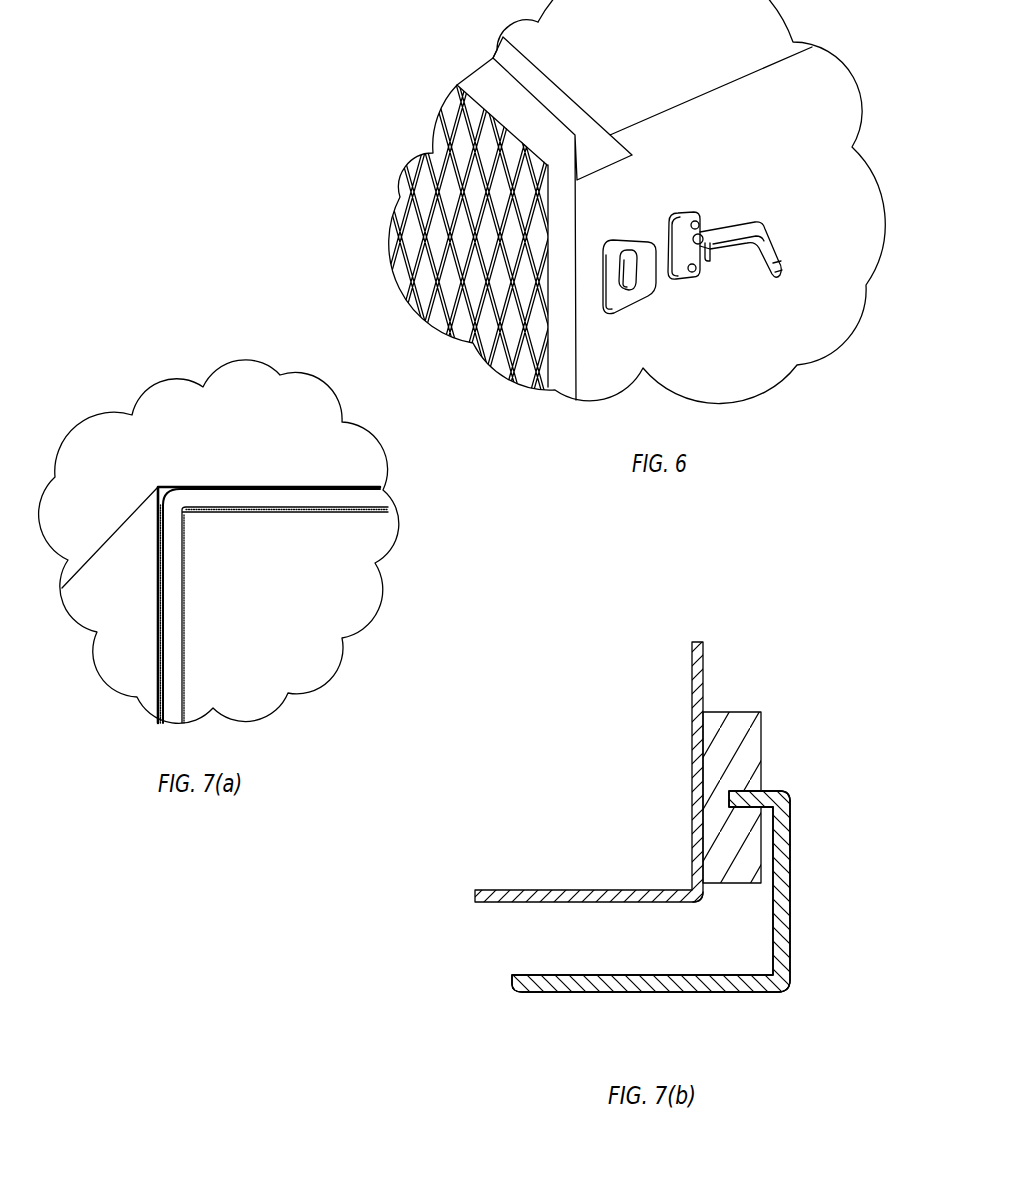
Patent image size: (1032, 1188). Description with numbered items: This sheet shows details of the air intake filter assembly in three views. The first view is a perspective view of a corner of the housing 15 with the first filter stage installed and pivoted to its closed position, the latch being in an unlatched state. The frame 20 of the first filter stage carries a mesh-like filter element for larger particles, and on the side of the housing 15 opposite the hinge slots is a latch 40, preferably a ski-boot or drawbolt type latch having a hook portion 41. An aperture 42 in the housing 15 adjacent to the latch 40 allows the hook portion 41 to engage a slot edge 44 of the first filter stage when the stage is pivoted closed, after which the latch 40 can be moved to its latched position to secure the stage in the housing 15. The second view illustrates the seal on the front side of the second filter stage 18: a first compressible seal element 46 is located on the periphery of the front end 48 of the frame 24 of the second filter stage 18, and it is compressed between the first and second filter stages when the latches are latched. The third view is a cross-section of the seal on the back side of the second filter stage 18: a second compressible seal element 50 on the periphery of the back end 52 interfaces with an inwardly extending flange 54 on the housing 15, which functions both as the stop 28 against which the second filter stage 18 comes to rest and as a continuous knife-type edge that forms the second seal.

In FIG. 6, the frame 20 is at (690, 98).
In FIG. 6, the latch 40 is at (723, 228).
In FIG. 6, the hook portion 41 is at (770, 250).
In FIG. 6, the aperture 42 is at (637, 297).
In FIG. 6, the slot edge 44 is at (643, 248).
In FIG. 7A, the first compressible seal element 46 is at (245, 500).
In FIG. 7A, the front end 48 is at (166, 486).
In FIG. 7A, the frame 24 is at (100, 592).
In FIG. 7B, the second filter stage 18 is at (505, 888).
In FIG. 7B, the second compressible seal element 50 is at (738, 735).
In FIG. 7B, the inwardly extending flange 54 is at (773, 790).
In FIG. 7B, the stop 28 is at (808, 795).
In FIG. 7B, the housing 15 is at (790, 903).
In FIG. 7B, the back end 52 is at (690, 910).